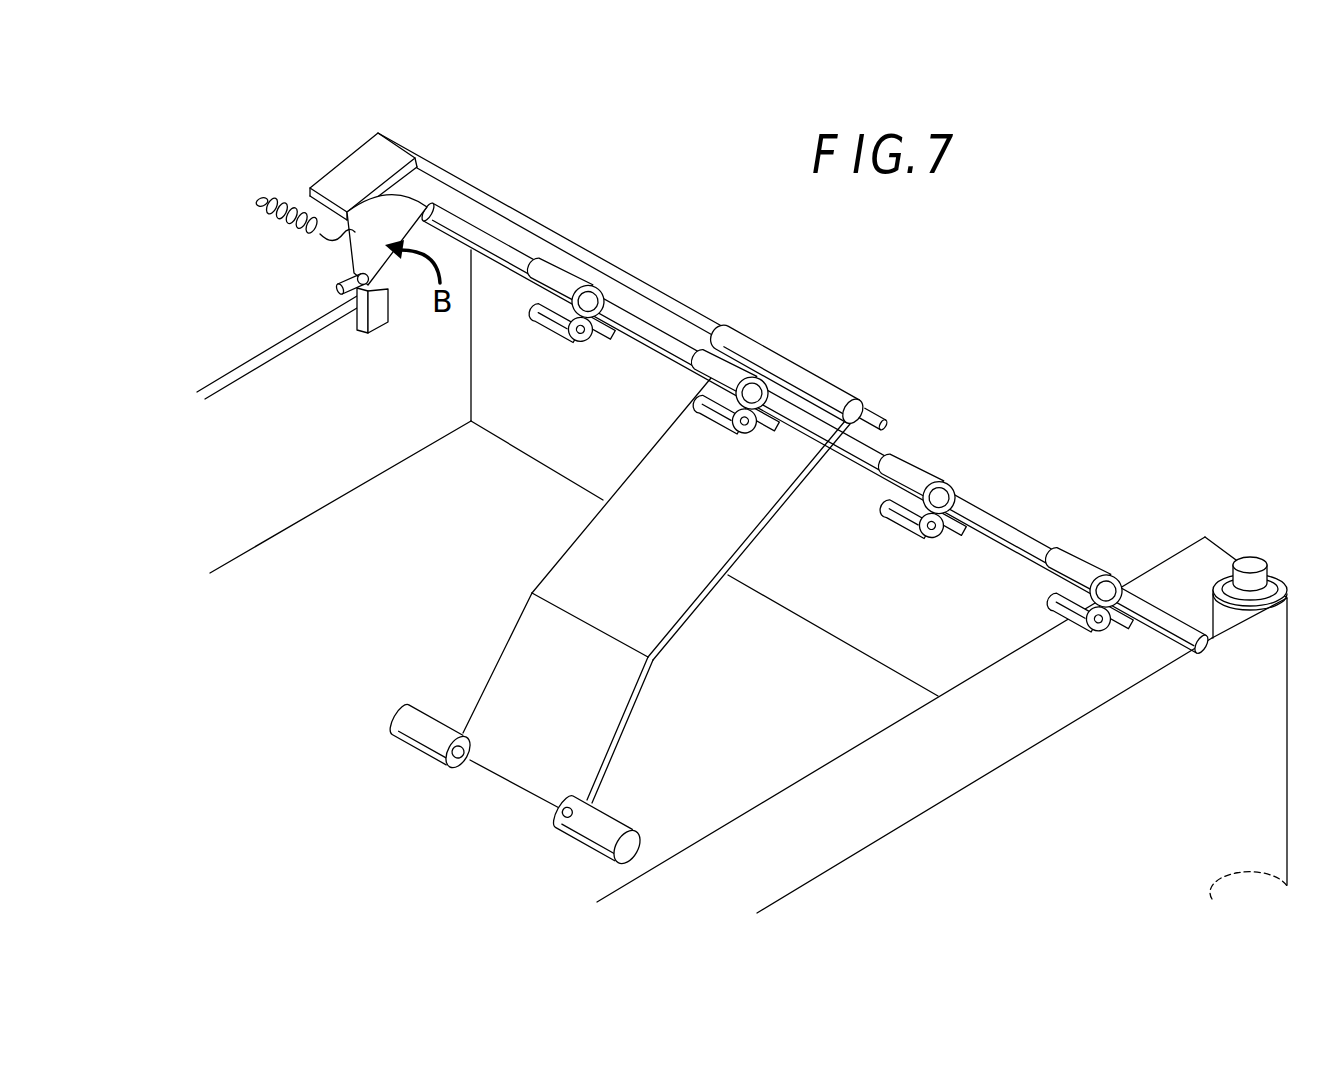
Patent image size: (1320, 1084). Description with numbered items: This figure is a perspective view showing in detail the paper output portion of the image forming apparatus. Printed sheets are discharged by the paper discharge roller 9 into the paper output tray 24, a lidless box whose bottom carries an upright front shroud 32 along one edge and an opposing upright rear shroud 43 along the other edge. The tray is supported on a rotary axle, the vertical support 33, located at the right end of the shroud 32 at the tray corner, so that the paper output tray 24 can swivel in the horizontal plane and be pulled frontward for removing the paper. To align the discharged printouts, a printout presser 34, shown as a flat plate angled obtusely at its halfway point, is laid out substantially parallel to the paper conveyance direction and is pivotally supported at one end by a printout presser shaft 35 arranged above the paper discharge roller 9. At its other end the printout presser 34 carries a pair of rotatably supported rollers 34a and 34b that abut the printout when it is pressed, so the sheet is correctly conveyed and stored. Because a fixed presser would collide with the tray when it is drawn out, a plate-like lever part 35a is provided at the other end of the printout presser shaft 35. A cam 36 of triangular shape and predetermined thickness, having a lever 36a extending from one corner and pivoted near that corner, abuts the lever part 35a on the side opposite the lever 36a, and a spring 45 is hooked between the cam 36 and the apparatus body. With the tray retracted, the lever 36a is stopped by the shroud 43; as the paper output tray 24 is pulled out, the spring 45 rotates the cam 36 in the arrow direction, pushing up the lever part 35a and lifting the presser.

The paper discharge roller 9 is at (920, 478).
The paper output tray 24 is at (860, 661).
The shroud 32 is at (958, 764).
The vertical support 33 is at (1250, 563).
The printout presser 34 is at (548, 722).
The roller 34a is at (432, 726).
The roller 34b is at (614, 826).
The printout presser shaft 35 is at (644, 278).
The lever part 35a is at (344, 172).
The cam 36 is at (358, 250).
The lever 36a is at (378, 314).
The shroud 43 is at (262, 394).
The spring 45 is at (268, 220).